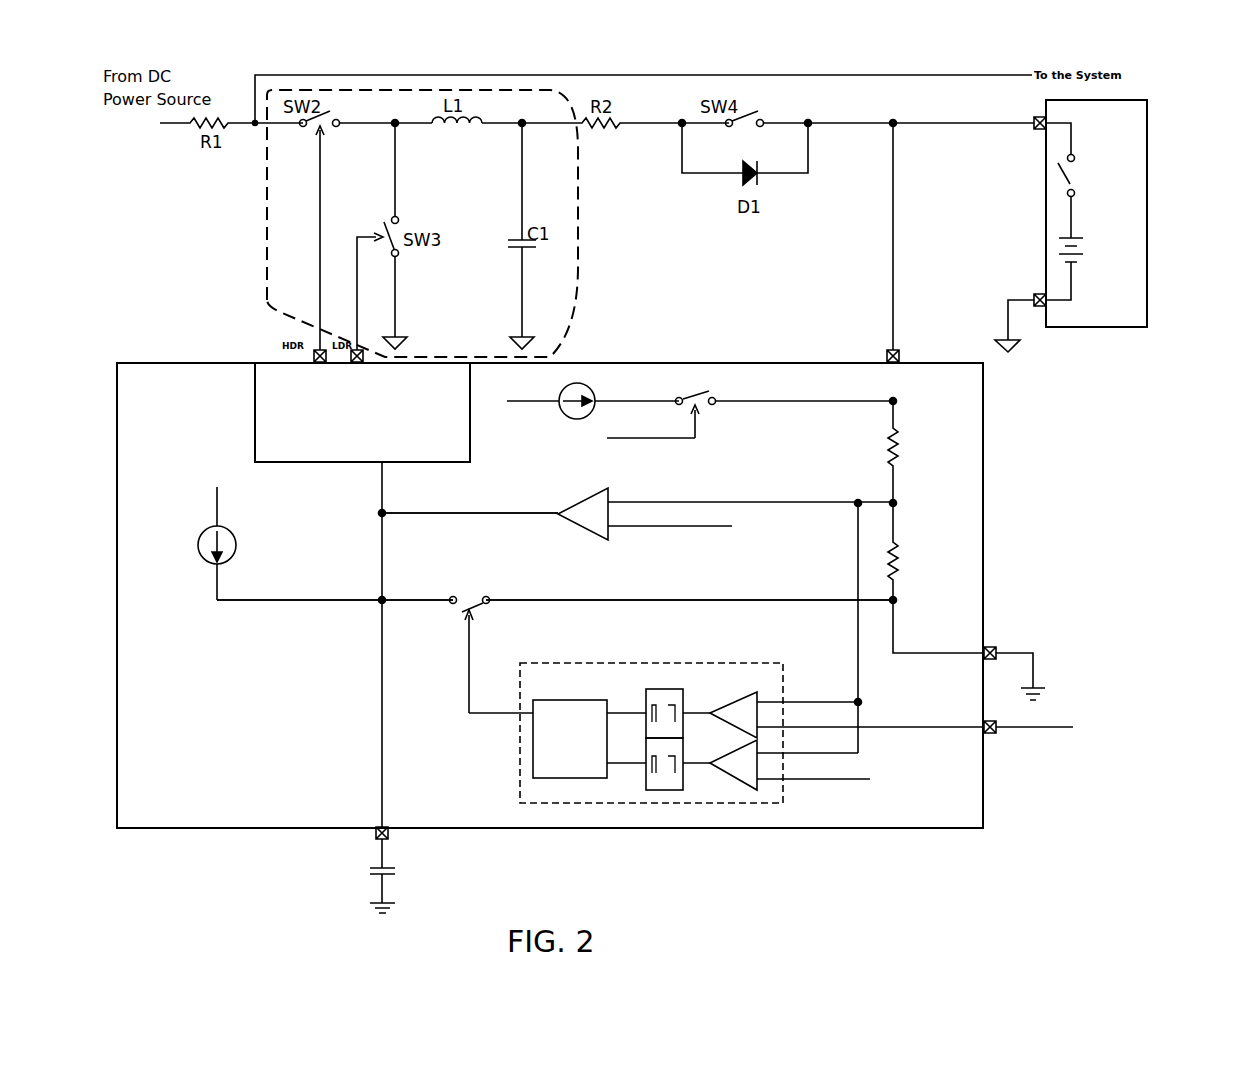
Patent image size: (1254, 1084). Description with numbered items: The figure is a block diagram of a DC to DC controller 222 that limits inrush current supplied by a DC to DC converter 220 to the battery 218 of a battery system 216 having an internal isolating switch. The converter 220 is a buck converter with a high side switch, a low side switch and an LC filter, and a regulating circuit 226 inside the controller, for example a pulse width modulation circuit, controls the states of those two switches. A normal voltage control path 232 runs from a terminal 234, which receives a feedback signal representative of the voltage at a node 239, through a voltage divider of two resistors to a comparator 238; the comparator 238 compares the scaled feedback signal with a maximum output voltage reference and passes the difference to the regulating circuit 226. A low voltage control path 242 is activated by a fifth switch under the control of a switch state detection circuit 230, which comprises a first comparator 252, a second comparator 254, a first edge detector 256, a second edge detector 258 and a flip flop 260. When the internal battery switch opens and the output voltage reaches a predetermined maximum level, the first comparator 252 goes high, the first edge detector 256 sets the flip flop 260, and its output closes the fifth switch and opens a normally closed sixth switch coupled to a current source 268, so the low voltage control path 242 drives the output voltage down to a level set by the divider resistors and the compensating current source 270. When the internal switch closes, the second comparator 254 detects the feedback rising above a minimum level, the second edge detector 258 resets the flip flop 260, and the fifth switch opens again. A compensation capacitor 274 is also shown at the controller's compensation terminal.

The battery system 216 is at (1103, 226).
The battery 218 is at (1099, 246).
The DC to DC converter 220 is at (580, 227).
The DC to DC controller 222 is at (983, 428).
The regulating circuit 226 is at (255, 417).
The switch state detection circuit 230 is at (687, 663).
The normal voltage control path 232 is at (503, 495).
The terminal 234 is at (888, 357).
The comparator 238 is at (582, 498).
The node 239 is at (895, 128).
The low voltage control path 242 is at (587, 580).
The first comparator 252 is at (742, 700).
The second comparator 254 is at (727, 780).
The first edge detector 256 is at (660, 689).
The second edge detector 258 is at (678, 792).
The flip flop 260 is at (570, 780).
The current source 268 is at (548, 408).
The current source 270 is at (198, 536).
The compensation capacitor 274 is at (367, 866).